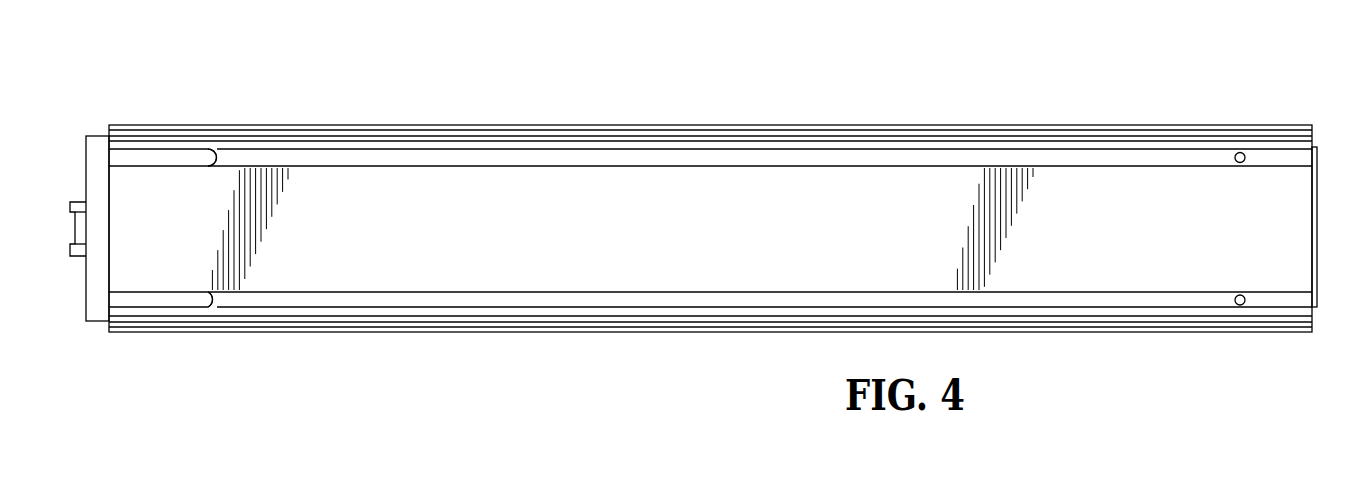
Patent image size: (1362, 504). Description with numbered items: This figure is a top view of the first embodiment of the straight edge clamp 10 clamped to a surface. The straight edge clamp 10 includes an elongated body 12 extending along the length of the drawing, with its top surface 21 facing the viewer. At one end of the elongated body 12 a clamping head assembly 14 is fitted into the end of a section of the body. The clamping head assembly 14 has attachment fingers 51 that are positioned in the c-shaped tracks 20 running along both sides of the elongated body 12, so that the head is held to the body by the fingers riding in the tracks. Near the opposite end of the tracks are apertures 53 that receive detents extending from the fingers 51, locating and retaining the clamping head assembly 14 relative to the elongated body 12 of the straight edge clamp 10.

The straight edge clamp 10 is at (398, 112).
The elongated body 12 is at (576, 180).
The clamping head assembly 14 is at (76, 325).
The c-shaped tracks 20 is at (1093, 155).
The top surface 21 is at (369, 233).
The attachment fingers 51 is at (152, 153).
The apertures 53 is at (1240, 152).